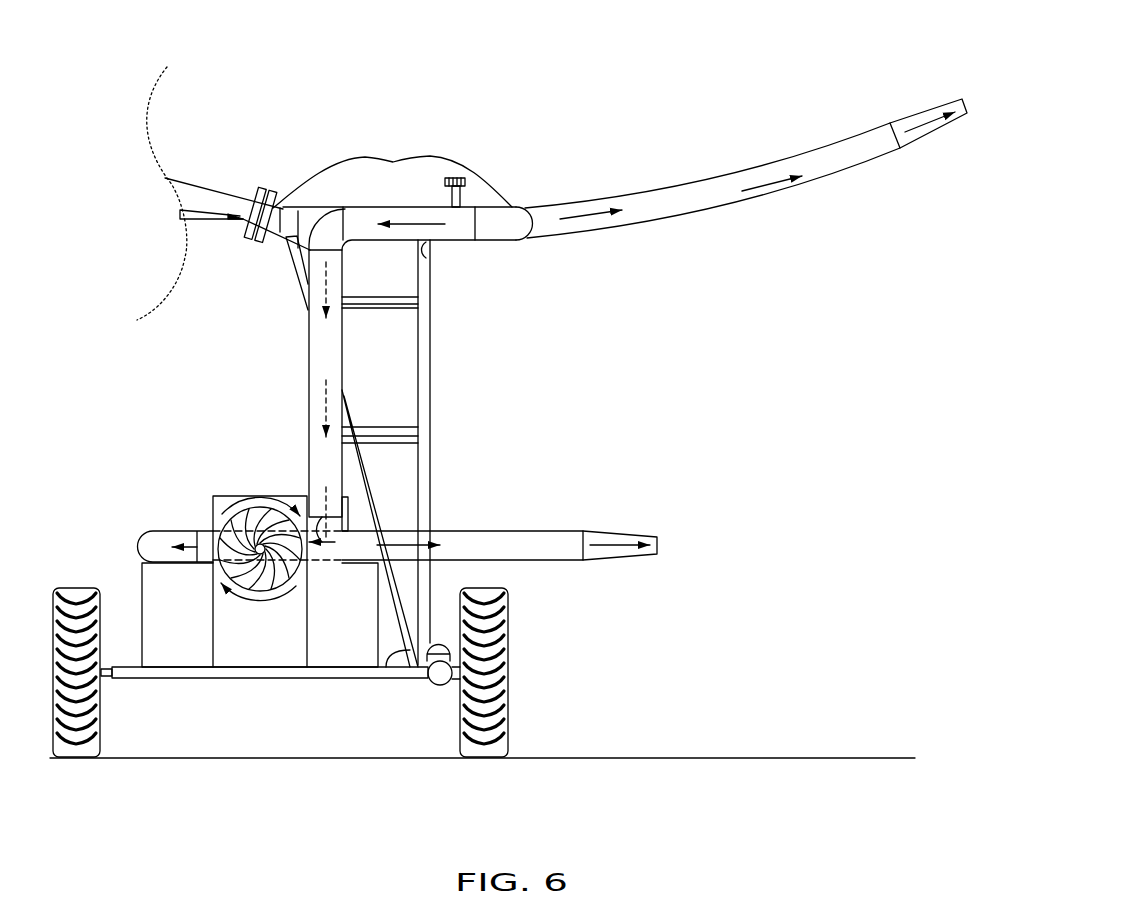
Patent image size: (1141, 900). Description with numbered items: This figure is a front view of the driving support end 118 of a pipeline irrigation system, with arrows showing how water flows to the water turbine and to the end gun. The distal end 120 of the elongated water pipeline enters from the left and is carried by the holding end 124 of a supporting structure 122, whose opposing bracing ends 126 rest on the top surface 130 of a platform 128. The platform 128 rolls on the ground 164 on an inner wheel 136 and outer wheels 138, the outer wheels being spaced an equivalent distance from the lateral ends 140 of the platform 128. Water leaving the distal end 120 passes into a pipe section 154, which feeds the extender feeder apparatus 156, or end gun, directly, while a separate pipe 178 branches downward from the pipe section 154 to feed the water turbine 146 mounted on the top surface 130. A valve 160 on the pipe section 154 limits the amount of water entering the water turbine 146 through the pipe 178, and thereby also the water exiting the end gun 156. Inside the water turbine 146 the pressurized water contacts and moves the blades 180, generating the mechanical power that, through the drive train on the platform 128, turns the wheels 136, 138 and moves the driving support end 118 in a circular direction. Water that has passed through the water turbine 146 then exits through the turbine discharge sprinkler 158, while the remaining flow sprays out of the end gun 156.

The driving support end 118 is at (670, 66).
The distal end 120 is at (198, 198).
The supporting structure 122 is at (422, 410).
The holding end 124 is at (287, 243).
The bracing ends 126 is at (428, 650).
The platform 128 is at (110, 669).
The top surface 130 is at (118, 667).
The inner wheel 136 is at (100, 730).
The outer wheels 138 is at (510, 673).
The lateral ends 140 is at (270, 678).
The water turbine 146 is at (279, 652).
The pipe section 154 is at (395, 163).
The extender feeder apparatus 156 is at (722, 182).
The turbine discharge sprinkler 158 is at (619, 530).
The valve 160 is at (446, 181).
The ground 164 is at (750, 757).
The pipe 178 is at (314, 350).
The blades 180 is at (247, 522).